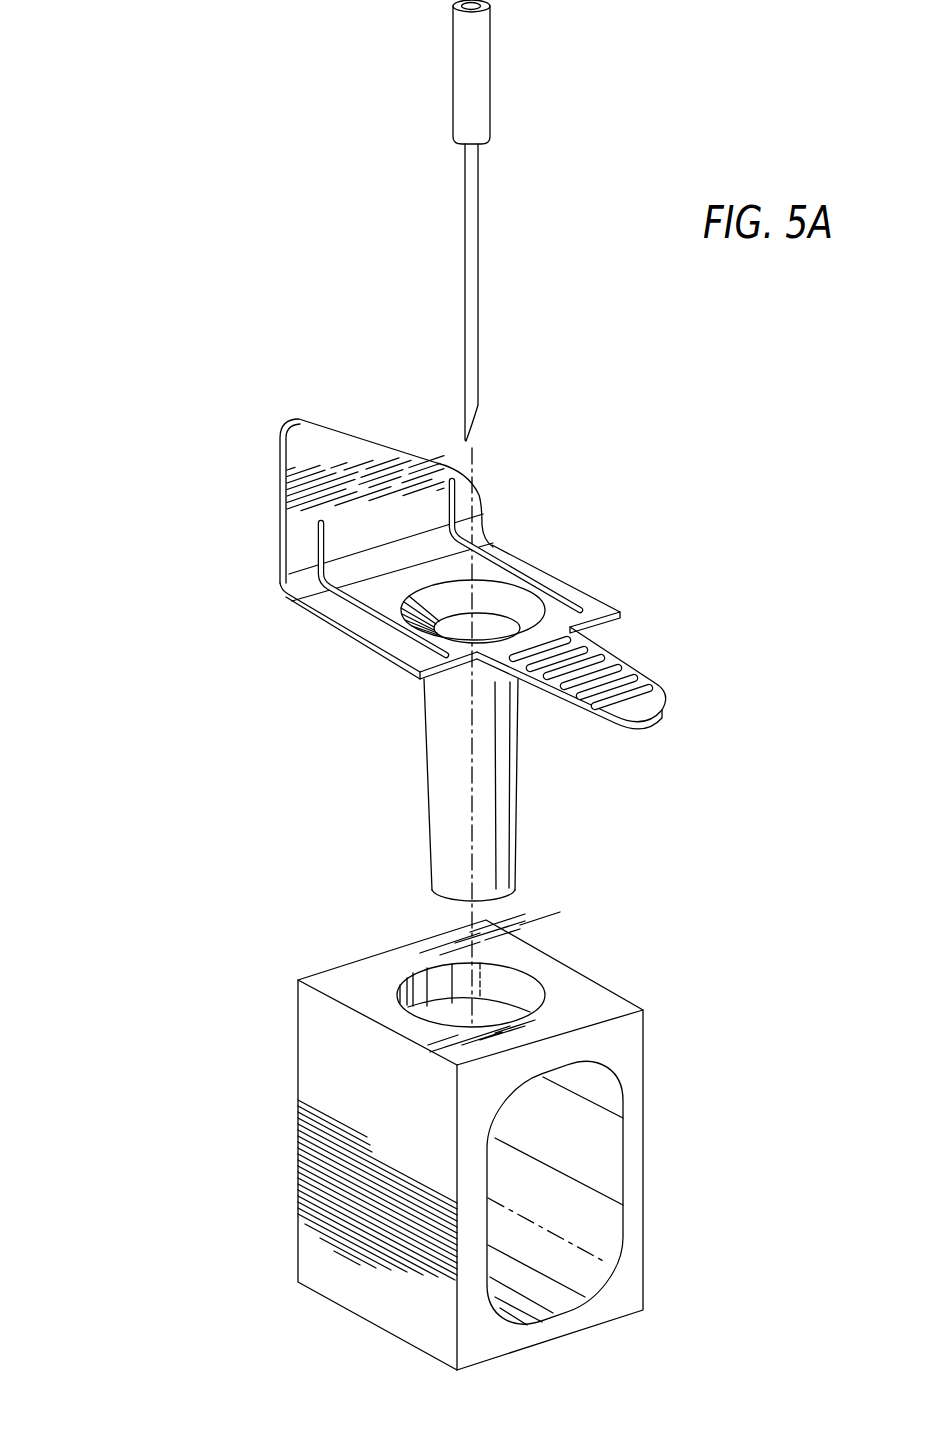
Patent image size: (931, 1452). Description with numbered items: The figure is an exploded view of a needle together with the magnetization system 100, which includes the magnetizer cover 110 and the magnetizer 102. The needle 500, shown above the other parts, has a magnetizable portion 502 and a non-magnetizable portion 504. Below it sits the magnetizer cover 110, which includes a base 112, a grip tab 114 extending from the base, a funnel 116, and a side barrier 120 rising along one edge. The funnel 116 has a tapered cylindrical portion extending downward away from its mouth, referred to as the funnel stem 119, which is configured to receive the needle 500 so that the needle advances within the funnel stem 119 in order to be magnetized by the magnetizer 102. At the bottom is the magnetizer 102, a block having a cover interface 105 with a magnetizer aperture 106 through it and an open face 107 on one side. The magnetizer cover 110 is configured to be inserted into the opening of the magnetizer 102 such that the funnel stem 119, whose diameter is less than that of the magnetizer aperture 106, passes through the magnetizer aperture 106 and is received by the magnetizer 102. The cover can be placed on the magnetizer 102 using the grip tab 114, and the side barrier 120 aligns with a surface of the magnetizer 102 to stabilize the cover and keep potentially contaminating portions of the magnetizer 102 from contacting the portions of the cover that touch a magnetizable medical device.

The needle 500 is at (404, 512).
The magnetizable portion 502 is at (476, 262).
The non-magnetizable portion 504 is at (481, 95).
The magnetization system 100 is at (460, 629).
The magnetizer cover 110 is at (539, 629).
The base 112 is at (374, 649).
The grip tab 114 is at (650, 681).
The funnel 116 is at (495, 628).
The funnel stem 119 is at (511, 832).
The side barrier 120 is at (389, 443).
The magnetizer 102 is at (445, 1136).
The cover interface 105 is at (589, 1008).
The magnetizer aperture 106 is at (515, 988).
The open face 107 is at (628, 1262).